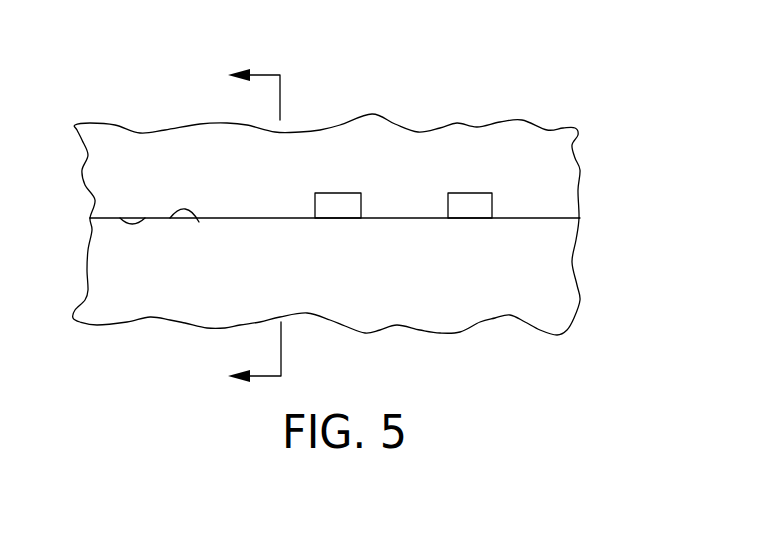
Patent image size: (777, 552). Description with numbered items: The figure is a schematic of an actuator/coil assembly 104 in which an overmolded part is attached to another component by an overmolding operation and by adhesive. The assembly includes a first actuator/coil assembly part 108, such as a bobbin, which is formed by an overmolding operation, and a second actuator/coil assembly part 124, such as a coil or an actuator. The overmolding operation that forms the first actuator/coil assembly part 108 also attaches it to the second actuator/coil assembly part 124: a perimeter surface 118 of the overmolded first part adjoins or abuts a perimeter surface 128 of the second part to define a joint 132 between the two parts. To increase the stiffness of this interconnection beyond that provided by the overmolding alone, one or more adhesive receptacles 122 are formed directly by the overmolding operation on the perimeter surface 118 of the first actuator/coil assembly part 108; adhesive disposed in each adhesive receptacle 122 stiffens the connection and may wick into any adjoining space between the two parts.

The actuator/coil assembly 104 is at (576, 50).
The first actuator/coil assembly part 108 is at (578, 163).
The perimeter surface 118 is at (145, 220).
The adhesive receptacles 122 is at (342, 193).
The second actuator/coil assembly part 124 is at (482, 322).
The perimeter surface 128 is at (199, 222).
The joint 132 is at (527, 218).